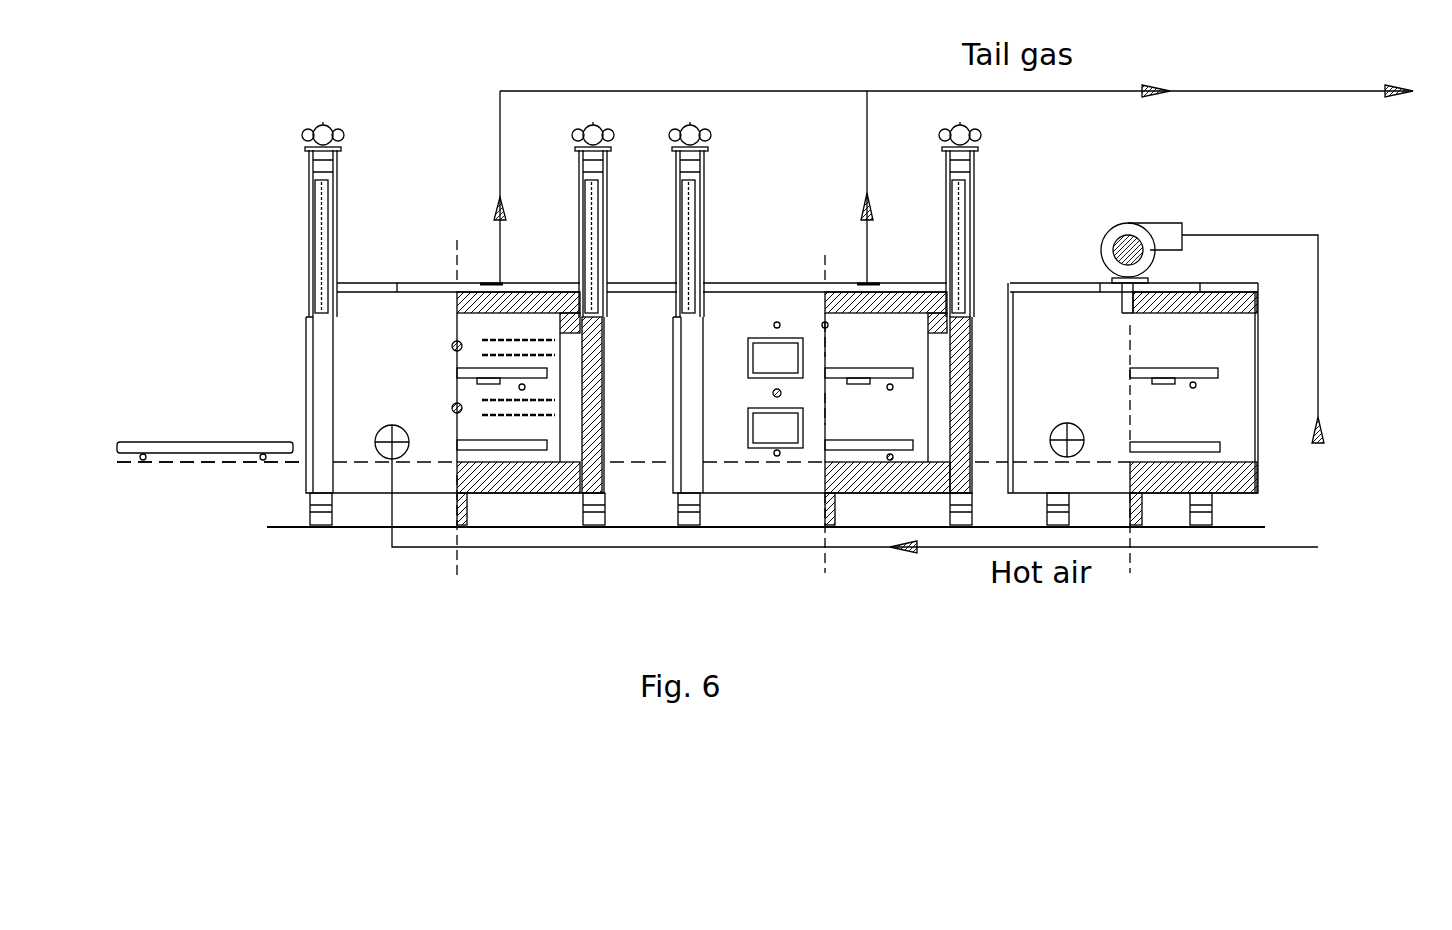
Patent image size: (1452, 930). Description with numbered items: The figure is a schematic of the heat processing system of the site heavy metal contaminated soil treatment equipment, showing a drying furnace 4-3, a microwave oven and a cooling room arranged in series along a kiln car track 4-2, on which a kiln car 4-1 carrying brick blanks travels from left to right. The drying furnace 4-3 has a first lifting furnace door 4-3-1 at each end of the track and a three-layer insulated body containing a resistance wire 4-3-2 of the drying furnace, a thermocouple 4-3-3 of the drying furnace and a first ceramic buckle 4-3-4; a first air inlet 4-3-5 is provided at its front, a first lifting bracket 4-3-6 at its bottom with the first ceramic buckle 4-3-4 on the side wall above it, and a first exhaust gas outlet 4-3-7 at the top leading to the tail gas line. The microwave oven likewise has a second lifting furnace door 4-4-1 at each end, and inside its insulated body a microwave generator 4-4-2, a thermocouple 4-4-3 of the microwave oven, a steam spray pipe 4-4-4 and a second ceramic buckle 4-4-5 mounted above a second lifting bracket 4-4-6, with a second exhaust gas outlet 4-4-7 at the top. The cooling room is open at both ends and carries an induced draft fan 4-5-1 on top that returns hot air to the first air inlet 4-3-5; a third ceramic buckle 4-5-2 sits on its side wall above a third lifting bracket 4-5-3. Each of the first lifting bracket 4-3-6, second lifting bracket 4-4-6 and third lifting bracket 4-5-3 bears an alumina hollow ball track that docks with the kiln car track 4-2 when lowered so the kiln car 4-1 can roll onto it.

The kiln car 4-1 is at (200, 443).
The kiln car track 4-2 is at (230, 463).
The drying furnace 4-3 is at (303, 360).
The first lifting furnace door 4-3-1 is at (320, 235).
The resistance wire of the drying furnace 4-3-2 is at (498, 338).
The thermocouple of the drying furnace 4-3-3 is at (452, 344).
The first ceramic buckle 4-3-4 is at (487, 388).
The first air inlet 4-3-5 is at (390, 453).
The first lifting bracket 4-3-6 is at (460, 457).
The first exhaust gas outlet 4-3-7 is at (497, 285).
The second lifting furnace door 4-4-1 is at (688, 200).
The microwave generator 4-4-2 is at (777, 352).
The thermocouple of the microwave oven 4-4-3 is at (780, 395).
The steam spray pipe 4-4-4 is at (775, 457).
The second ceramic buckle 4-4-5 is at (852, 378).
The second lifting bracket 4-4-6 is at (888, 461).
The second exhaust gas outlet 4-4-7 is at (860, 285).
The induced draft fan 4-5-1 is at (1148, 232).
The third ceramic buckle 4-5-2 is at (1163, 385).
The third lifting bracket 4-5-3 is at (1255, 470).